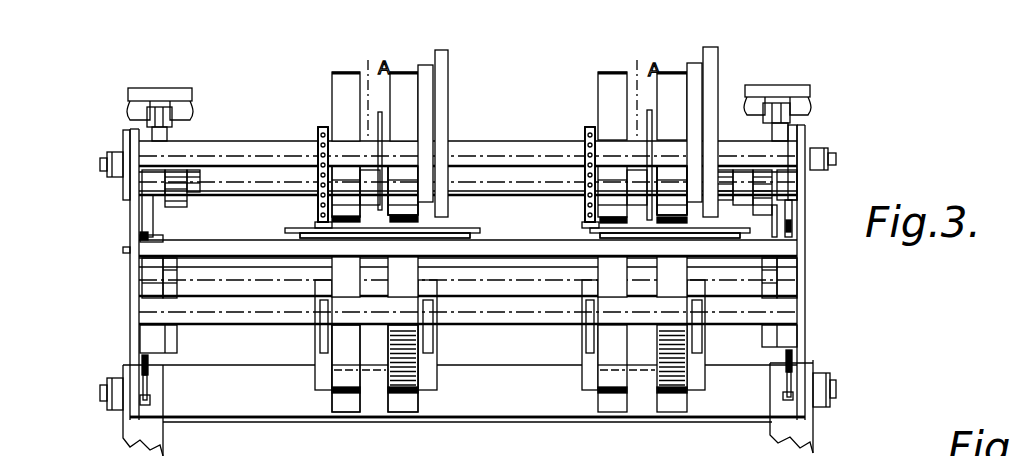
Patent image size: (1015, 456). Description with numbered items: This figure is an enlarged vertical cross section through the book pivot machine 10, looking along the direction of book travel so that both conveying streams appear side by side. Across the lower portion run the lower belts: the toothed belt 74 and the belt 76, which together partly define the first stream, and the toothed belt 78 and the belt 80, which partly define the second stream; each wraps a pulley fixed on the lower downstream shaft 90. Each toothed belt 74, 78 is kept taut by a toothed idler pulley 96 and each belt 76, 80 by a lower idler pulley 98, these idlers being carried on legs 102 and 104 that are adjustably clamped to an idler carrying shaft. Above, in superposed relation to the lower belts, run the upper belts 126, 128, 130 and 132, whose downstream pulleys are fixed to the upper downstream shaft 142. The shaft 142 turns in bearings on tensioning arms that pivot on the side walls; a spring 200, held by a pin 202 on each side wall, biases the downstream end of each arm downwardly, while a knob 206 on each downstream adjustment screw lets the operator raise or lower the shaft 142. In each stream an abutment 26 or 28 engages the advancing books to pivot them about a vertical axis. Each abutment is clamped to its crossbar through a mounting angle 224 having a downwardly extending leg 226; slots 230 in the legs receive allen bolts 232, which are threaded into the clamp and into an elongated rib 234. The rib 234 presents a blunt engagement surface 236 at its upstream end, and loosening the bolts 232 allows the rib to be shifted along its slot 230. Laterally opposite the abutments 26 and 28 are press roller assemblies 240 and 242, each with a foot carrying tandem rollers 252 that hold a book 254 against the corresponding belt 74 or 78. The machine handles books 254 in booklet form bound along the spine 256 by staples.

The book pivot machine 10 is at (467, 436).
The abutment 26 is at (589, 116).
The abutment 28 is at (318, 122).
The toothed belt 74 is at (677, 235).
The belt 76 is at (610, 237).
The toothed belt 78 is at (410, 237).
The belt 80 is at (342, 237).
The lower downstream shaft 90 is at (485, 317).
The toothed idler pulley 96 is at (410, 368).
The lower idler pulley 98 is at (345, 355).
The leg 102 is at (427, 353).
The leg 104 is at (317, 360).
The upper belt 126 is at (687, 178).
The upper belt 128 is at (605, 72).
The upper belt 130 is at (393, 72).
The upper belt 132 is at (347, 72).
The upper downstream shaft 142 is at (250, 180).
The spring 200 is at (142, 363).
The pin 202 is at (150, 400).
The knob 206 is at (147, 92).
The mounting angle 224 is at (317, 140).
The downwardly extending leg 226 is at (300, 192).
The slot 230 is at (318, 190).
The allen bolt 232 is at (316, 120).
The elongated rib 234 is at (285, 225).
The blunt engagement surface 236 is at (597, 233).
The press roller assembly 240 is at (726, 60).
The press roller assembly 242 is at (452, 84).
The roller 252 is at (403, 192).
The book 254 is at (480, 227).
The spine 256 is at (560, 238).